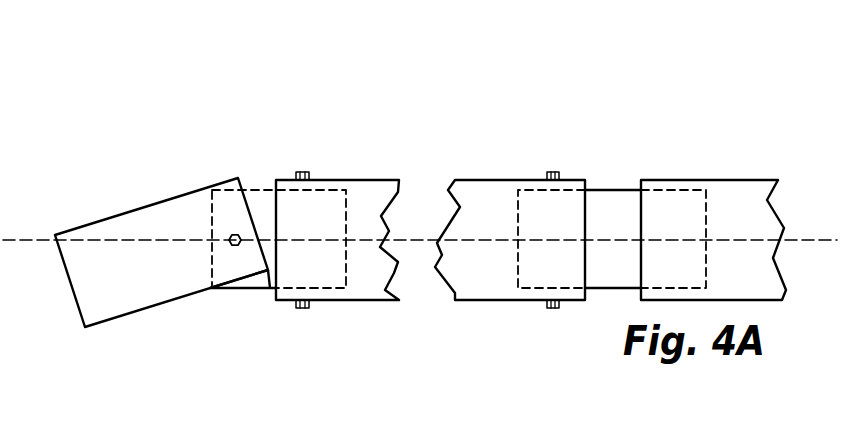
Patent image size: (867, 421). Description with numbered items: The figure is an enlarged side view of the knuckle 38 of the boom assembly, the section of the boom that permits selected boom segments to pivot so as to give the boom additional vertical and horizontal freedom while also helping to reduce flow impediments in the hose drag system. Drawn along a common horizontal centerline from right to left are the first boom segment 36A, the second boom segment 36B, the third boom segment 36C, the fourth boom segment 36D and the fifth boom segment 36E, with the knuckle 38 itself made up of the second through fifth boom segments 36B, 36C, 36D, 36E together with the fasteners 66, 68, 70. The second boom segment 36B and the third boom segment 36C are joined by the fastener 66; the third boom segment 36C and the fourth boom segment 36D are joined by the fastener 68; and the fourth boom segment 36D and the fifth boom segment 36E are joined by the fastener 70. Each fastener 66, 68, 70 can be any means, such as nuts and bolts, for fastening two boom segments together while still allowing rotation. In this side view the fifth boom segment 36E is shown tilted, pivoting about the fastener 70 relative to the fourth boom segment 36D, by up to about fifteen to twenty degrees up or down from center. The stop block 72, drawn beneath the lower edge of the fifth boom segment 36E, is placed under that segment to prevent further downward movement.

The knuckle 38 is at (134, 96).
The first boom segment 36A is at (740, 198).
The second boom segment 36B is at (608, 200).
The third boom segment 36C is at (362, 195).
The fourth boom segment 36D is at (252, 197).
The fifth boom segment 36E is at (168, 205).
The fastener 66 is at (548, 308).
The fastener 68 is at (298, 308).
The fastener 70 is at (241, 243).
The stop block 72 is at (243, 290).